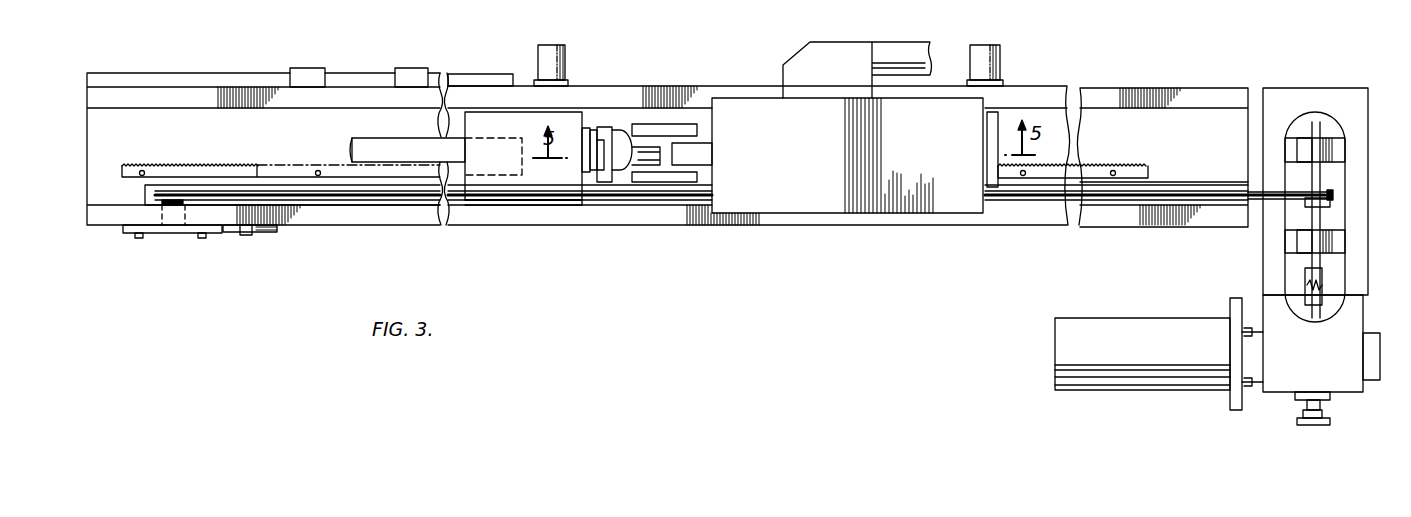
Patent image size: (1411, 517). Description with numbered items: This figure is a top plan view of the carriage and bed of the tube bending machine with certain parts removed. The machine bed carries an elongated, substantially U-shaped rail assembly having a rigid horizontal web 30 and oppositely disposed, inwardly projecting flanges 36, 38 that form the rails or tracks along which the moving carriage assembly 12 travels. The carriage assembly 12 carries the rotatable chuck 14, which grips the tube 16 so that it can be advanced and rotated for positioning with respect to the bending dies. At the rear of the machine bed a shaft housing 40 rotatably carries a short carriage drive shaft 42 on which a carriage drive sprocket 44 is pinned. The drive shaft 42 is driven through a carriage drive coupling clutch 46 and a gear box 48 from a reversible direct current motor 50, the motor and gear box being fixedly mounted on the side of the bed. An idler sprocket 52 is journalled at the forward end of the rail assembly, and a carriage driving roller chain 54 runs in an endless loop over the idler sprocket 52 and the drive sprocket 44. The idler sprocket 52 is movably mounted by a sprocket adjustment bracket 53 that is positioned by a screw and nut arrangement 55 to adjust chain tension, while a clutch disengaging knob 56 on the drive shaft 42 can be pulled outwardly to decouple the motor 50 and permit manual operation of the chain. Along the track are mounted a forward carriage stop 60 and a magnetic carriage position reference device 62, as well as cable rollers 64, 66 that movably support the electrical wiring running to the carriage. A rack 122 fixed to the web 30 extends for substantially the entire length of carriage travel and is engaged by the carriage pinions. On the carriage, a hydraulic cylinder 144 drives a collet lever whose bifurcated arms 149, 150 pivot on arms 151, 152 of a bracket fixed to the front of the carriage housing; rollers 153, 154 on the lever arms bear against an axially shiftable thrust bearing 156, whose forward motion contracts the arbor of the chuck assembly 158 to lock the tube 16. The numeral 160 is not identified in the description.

The carriage assembly 12 is at (855, 213).
The rotatable chuck 14 is at (540, 200).
The tube 16 is at (352, 140).
The web 30 is at (87, 130).
The flange 36 is at (1057, 88).
The flange 38 is at (442, 215).
The shaft housing 40 is at (1354, 88).
The carriage drive shaft 42 is at (1322, 184).
The carriage drive sprocket 44 is at (1333, 196).
The carriage drive coupling clutch 46 is at (1305, 285).
The gear box 48 is at (1282, 384).
The reversible direct current motor 50 is at (1130, 318).
The idler sprocket 52 is at (148, 188).
The sprocket adjustment bracket 53 is at (222, 233).
The carriage driving roller chain 54 is at (335, 197).
The screw and nut arrangement 55 is at (242, 232).
The clutch disengaging knob 56 is at (1320, 424).
The forward carriage stop 60 is at (303, 68).
The magnetic carriage position reference device 62 is at (411, 68).
The cable roller 64 is at (538, 50).
The cable roller 66 is at (1000, 54).
The rack 122 is at (236, 164).
The hydraulic cylinder 144 is at (712, 152).
The bifurcated arm 149 is at (618, 130).
The bifurcated arm 150 is at (604, 185).
The collet lever bracket arm 151 is at (648, 135).
The collet lever bracket arm 152 is at (677, 182).
The roller 153 is at (602, 128).
The roller 154 is at (593, 178).
The thrust bearing 156 is at (582, 172).
The chuck assembly 158 is at (510, 206).
The piston rod 160 is at (412, 138).